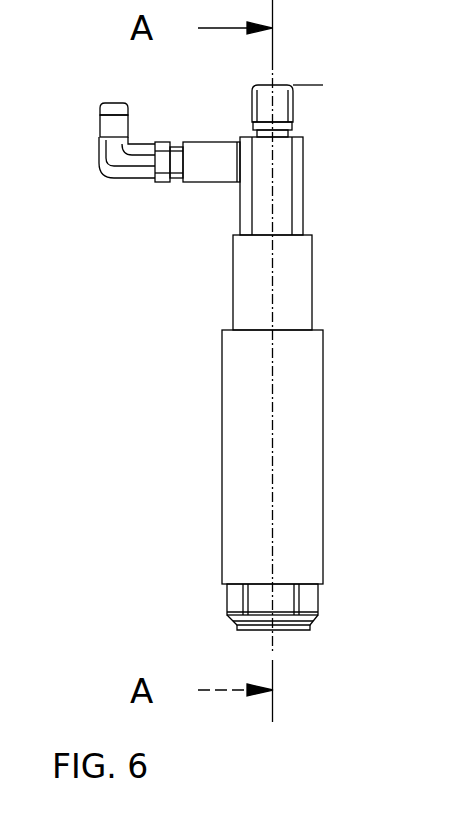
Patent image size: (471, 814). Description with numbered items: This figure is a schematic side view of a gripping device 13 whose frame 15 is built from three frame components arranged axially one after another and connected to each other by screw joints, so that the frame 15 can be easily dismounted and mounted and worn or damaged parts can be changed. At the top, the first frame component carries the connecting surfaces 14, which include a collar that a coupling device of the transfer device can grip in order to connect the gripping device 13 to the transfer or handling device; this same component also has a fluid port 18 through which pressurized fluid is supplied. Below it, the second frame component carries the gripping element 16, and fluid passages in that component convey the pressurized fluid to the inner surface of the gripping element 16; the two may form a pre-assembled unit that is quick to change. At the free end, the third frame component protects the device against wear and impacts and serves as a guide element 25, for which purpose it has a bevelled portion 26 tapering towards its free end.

The gripping device 13 is at (118, 334).
The connecting surfaces 14 is at (283, 105).
The frame 15 is at (203, 318).
The gripping element 16 is at (245, 480).
The fluid port 18 is at (205, 168).
The guide element 25 is at (240, 600).
The bevelled portion 26 is at (232, 625).